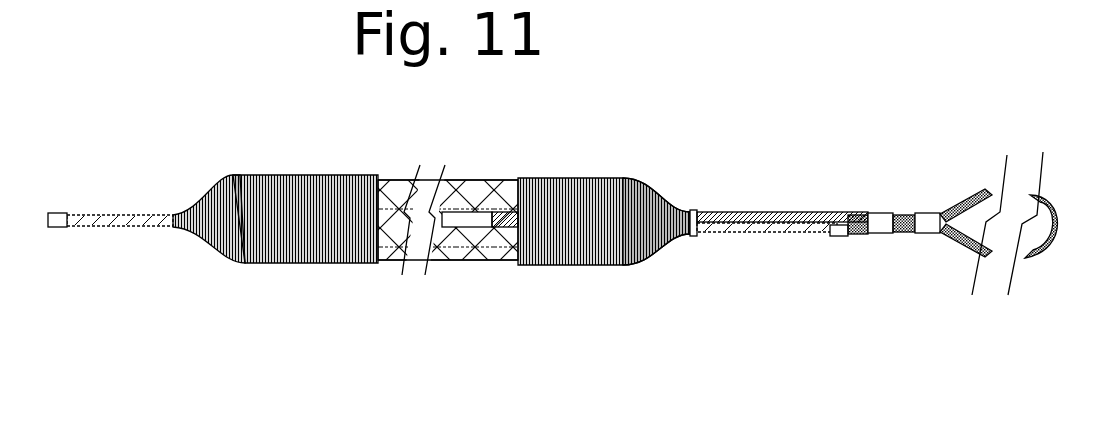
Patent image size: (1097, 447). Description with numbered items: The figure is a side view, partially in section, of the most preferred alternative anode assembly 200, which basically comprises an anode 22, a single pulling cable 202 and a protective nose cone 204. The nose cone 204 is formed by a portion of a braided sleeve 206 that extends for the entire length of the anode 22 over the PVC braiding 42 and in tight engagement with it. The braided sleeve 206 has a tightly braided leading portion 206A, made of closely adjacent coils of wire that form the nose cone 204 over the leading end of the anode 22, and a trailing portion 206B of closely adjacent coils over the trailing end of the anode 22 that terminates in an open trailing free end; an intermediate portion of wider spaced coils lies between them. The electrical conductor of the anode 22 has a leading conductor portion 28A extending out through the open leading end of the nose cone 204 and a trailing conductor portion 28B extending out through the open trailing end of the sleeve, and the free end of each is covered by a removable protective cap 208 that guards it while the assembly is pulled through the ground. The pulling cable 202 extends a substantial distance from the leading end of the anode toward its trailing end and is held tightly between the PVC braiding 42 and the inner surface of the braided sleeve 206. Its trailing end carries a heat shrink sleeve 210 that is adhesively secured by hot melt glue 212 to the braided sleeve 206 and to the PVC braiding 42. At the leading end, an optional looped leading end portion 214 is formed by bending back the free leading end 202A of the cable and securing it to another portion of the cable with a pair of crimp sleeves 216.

The anode assembly 200 is at (540, 322).
The pulling cable 202 is at (503, 212).
The free leading end of the pulling cable 202A is at (862, 232).
The protective nose cone 204 is at (607, 180).
The braided sleeve 206 is at (275, 245).
The leading portion of the braided sleeve 206A is at (650, 192).
The trailing portion of the braided sleeve 206B is at (232, 180).
The removable protective cap 208 is at (58, 230).
The heat shrink sleeve 210 is at (467, 214).
The hot melt glue 212 is at (460, 262).
The looped leading end portion 214 is at (1041, 197).
The crimp sleeves 216 is at (928, 220).
The anode 22 is at (400, 262).
The PVC braiding 42 is at (402, 245).
The leading conductor portion 28A is at (765, 230).
The trailing conductor portion 28B is at (118, 228).